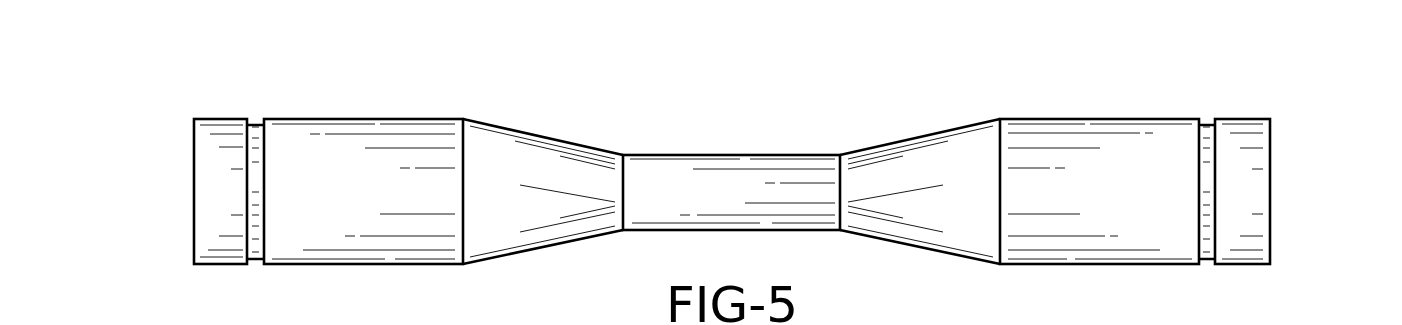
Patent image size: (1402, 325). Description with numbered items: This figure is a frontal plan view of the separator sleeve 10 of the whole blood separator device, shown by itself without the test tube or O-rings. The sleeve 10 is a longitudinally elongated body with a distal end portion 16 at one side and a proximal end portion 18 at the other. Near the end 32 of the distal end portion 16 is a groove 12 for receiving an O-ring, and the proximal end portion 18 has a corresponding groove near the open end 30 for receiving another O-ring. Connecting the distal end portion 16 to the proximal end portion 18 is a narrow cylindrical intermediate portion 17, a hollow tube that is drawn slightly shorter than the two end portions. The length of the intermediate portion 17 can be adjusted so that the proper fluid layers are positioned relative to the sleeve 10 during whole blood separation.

The sleeve body 10 is at (1268, 71).
The groove 12 is at (257, 124).
The distal end portion 16 is at (350, 119).
The intermediate portion 17 is at (717, 154).
The proximal end portion 18 is at (1085, 118).
The open end 30 is at (1270, 190).
The end 32 is at (196, 193).